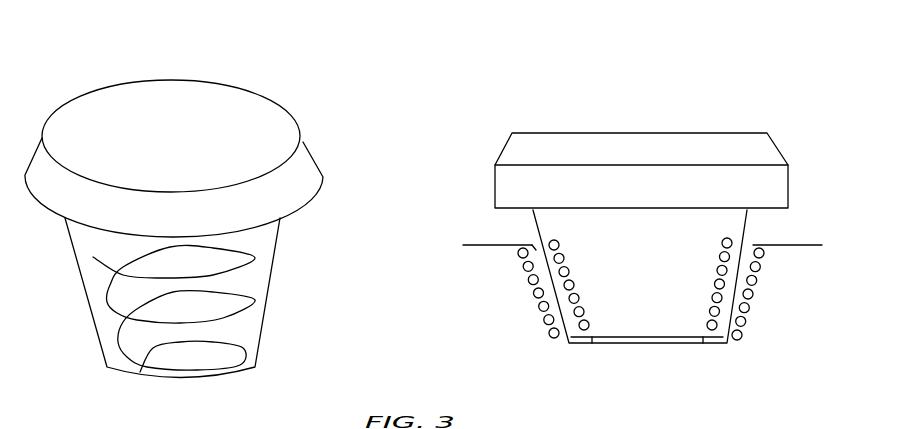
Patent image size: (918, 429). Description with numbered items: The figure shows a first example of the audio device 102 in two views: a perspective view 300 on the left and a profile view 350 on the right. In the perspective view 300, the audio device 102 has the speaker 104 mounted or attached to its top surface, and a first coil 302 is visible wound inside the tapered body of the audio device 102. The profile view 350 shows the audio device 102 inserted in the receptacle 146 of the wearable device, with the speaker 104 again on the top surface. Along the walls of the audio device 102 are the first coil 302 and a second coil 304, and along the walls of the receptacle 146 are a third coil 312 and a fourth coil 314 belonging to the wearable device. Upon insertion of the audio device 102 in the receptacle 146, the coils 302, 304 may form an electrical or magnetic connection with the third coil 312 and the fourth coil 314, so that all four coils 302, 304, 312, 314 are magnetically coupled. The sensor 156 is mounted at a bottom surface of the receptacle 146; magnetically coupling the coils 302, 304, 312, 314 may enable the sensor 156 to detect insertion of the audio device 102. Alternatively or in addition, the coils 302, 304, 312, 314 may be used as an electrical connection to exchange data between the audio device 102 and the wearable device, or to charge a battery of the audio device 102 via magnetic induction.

The perspective view 300 is at (104, 62).
The profile view 350 is at (494, 98).
The audio device 102 is at (313, 152).
The speaker 104 is at (187, 146).
The receptacle 146 is at (527, 232).
The sensor 156 is at (646, 339).
The first coil 302 is at (250, 313).
The second coil 304 is at (720, 272).
The third coil 312 is at (538, 317).
The fourth coil 314 is at (745, 325).